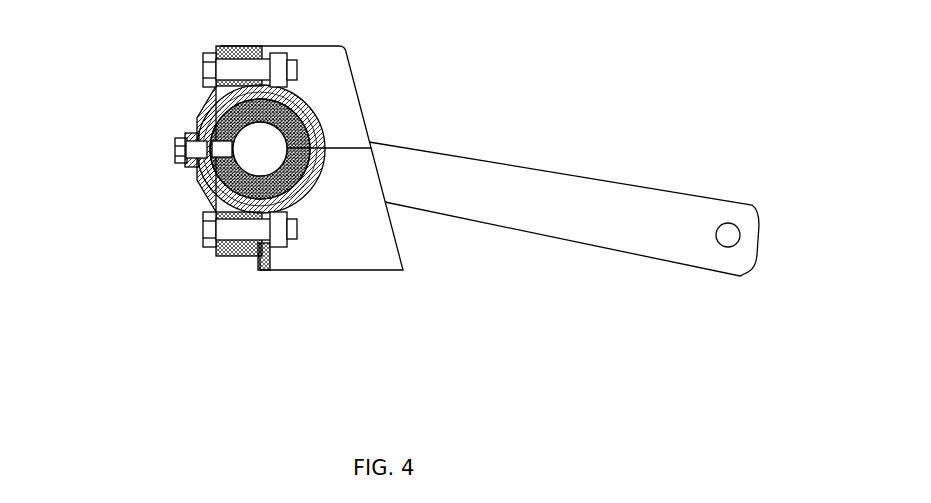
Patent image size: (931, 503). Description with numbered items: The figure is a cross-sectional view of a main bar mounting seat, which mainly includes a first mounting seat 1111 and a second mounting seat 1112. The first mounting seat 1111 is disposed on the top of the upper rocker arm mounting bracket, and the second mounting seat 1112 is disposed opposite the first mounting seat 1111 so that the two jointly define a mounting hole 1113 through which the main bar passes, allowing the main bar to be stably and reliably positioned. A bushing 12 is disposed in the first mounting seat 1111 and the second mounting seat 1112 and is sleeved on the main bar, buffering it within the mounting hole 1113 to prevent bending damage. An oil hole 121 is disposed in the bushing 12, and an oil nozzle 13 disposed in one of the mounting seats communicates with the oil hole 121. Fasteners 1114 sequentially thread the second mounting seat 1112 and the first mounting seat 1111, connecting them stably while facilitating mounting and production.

The first mounting seat 1111 is at (337, 83).
The second mounting seat 1112 is at (202, 102).
The mounting hole 1113 is at (188, 133).
The fasteners 1114 is at (205, 57).
The bushing 12 is at (310, 121).
The oil nozzle 13 is at (183, 160).
The oil hole 121 is at (286, 198).